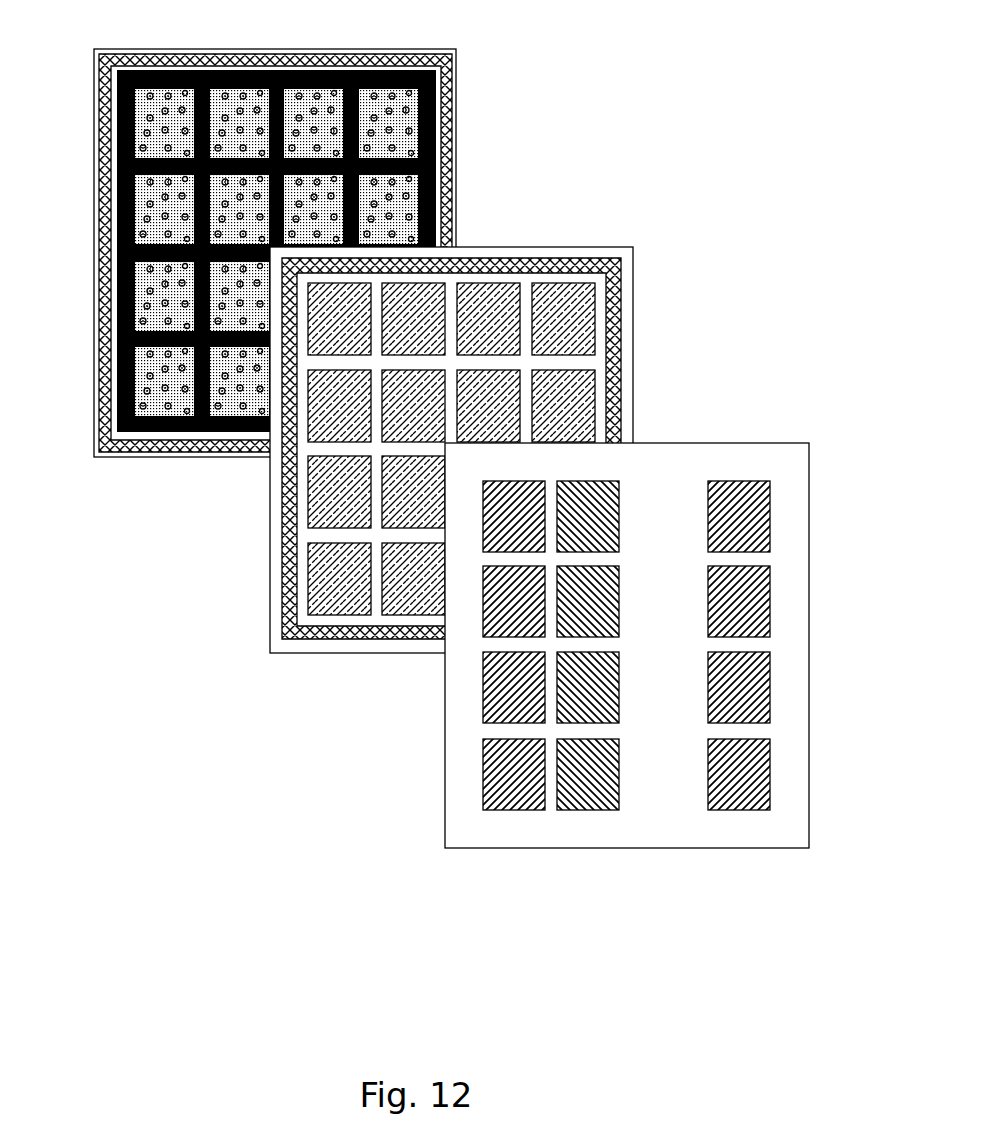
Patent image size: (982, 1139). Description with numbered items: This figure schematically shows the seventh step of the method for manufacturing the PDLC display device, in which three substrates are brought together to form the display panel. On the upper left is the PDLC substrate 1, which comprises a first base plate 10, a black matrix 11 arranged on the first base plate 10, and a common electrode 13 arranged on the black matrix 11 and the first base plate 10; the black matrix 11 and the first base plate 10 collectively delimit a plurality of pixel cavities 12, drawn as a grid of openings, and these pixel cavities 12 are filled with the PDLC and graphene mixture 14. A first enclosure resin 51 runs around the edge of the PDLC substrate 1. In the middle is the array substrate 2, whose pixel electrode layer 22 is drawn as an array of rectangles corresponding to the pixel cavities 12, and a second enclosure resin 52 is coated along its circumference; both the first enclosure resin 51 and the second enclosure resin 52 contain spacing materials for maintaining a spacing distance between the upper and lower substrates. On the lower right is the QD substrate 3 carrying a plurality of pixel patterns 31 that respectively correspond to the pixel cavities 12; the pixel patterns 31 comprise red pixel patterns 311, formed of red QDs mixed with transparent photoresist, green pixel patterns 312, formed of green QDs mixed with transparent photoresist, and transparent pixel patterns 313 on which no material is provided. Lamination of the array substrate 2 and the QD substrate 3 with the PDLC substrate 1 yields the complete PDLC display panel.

The PDLC substrate 1 is at (286, 228).
The first base plate 10 is at (162, 57).
The black matrix 11 is at (388, 72).
The pixel cavities 12 is at (400, 119).
The common electrode 13 is at (303, 74).
The PDLC and graphene mixture 14 is at (230, 74).
The first enclosure resin 51 is at (447, 82).
The array substrate 2 is at (453, 453).
The pixel electrode layer 22 is at (308, 588).
The second enclosure resin 52 is at (617, 290).
The QD substrate 3 is at (628, 709).
The pixel patterns 31 is at (572, 728).
The red pixel patterns 311 is at (513, 795).
The green pixel patterns 312 is at (592, 795).
The transparent pixel patterns 313 is at (694, 696).